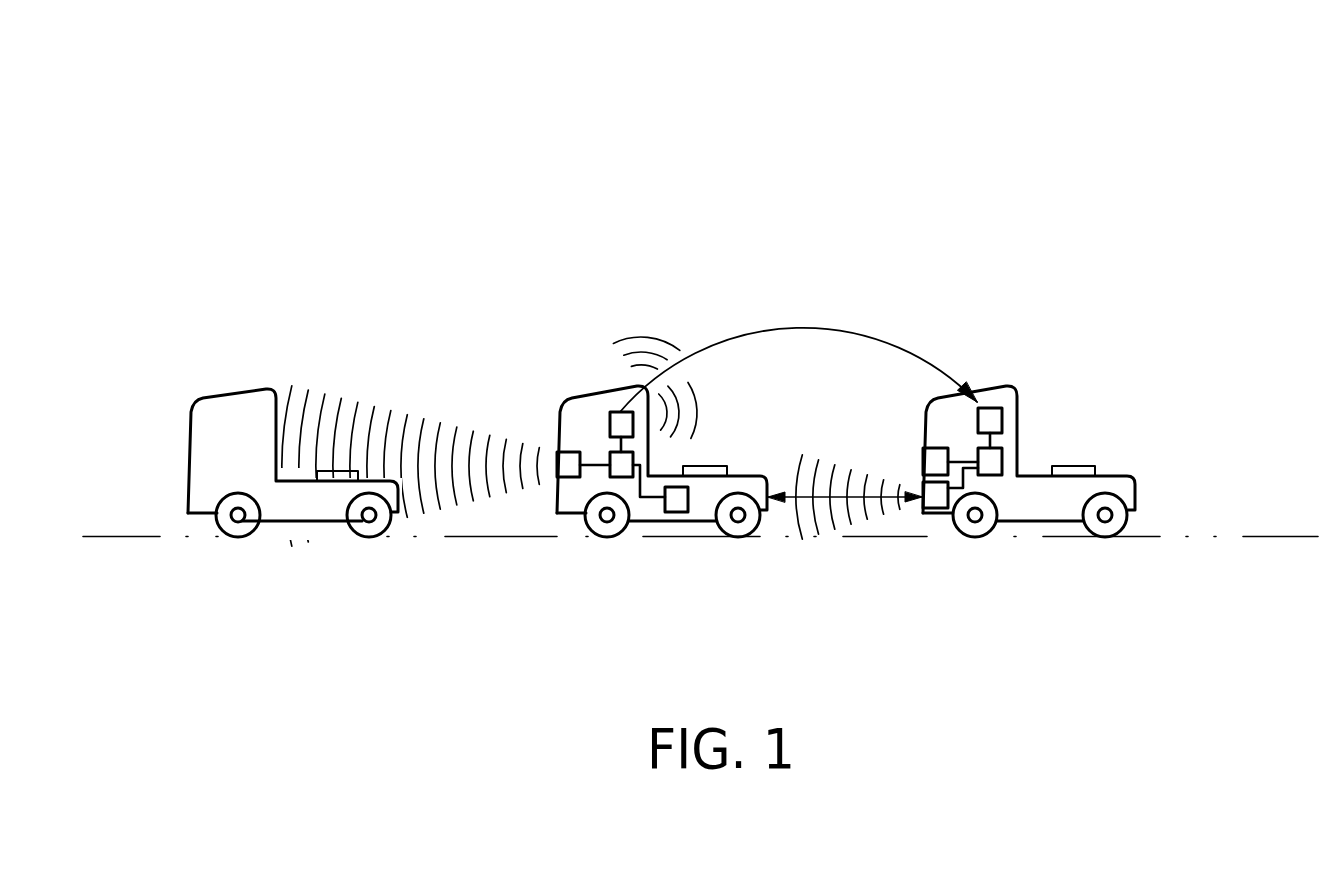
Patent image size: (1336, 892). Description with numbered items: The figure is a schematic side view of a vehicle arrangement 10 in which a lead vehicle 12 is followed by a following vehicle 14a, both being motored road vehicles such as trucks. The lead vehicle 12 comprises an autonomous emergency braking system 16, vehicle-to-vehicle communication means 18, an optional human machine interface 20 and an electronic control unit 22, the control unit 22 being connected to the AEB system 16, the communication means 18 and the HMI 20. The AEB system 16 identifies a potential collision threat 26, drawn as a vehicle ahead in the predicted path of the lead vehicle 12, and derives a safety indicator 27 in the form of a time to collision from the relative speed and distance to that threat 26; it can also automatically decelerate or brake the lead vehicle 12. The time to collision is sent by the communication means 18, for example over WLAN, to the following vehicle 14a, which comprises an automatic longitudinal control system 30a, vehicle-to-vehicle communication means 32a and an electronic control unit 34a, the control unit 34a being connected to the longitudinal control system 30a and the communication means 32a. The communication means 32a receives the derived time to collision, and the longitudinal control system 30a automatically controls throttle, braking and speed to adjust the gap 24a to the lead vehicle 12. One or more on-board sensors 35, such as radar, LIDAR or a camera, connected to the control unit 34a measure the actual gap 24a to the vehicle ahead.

The vehicle platooning system 10 is at (615, 173).
The lead vehicle 12 is at (703, 493).
The following vehicle 14a is at (1062, 495).
The autonomous emergency braking (AEB) system 16 is at (568, 479).
The vehicle-to-vehicle (V2V) communication means 18 is at (610, 424).
The human machine interface (HMI) 20 is at (682, 487).
The electronic control unit (ECU) 22 is at (625, 479).
The gap 24a is at (840, 497).
The potential collision threat 26 is at (227, 396).
The safety indicator 27 is at (792, 328).
The automatic longitudinal control system 30a is at (923, 458).
The vehicle-to-vehicle (V2V) communication means 32a is at (1002, 423).
The electronic control unit (ECU) 34a is at (990, 478).
The on-board sensors 35 is at (935, 510).